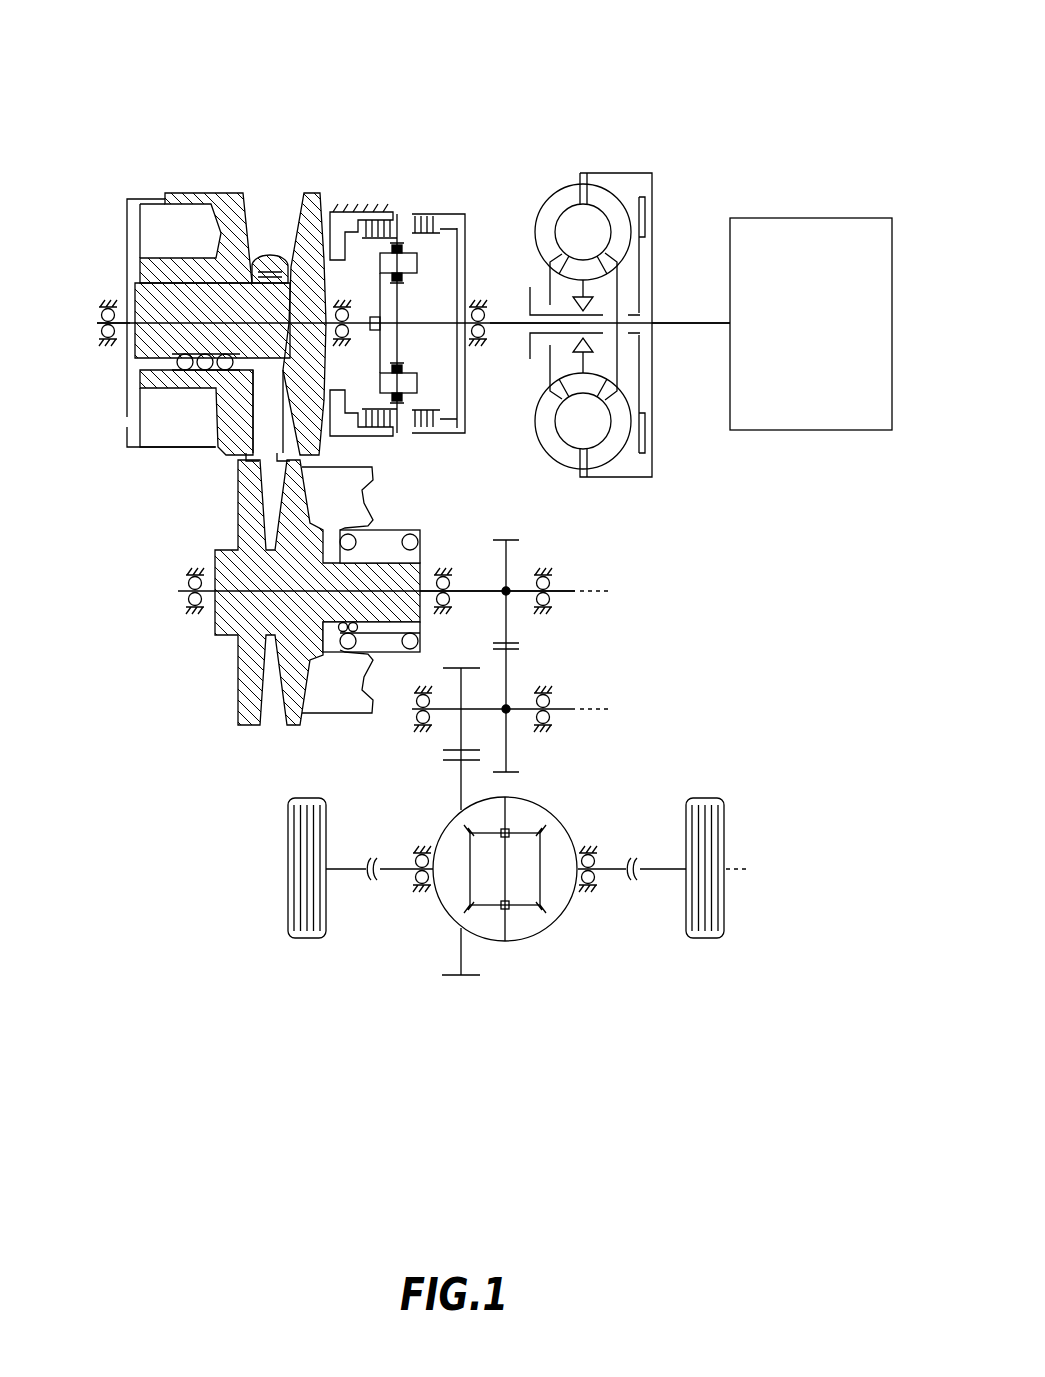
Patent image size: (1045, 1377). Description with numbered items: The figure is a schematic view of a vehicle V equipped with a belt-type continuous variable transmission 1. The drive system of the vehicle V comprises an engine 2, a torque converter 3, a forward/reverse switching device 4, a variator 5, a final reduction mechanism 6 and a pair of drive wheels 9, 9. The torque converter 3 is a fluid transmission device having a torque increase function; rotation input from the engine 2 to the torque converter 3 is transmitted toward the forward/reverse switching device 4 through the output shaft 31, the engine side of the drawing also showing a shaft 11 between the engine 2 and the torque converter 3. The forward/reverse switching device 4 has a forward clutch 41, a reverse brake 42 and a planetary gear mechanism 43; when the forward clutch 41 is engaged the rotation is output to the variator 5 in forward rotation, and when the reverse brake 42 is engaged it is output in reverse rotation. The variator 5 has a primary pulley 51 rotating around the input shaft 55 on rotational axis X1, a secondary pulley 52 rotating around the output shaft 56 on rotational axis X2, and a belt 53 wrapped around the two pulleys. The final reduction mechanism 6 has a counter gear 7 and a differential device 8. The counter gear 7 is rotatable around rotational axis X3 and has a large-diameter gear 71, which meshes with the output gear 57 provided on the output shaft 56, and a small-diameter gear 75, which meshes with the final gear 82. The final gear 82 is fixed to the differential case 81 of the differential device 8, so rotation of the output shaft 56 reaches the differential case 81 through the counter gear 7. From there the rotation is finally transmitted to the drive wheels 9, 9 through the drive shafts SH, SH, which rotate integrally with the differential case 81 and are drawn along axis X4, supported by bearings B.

The belt-type continuous variable transmission 1 is at (433, 535).
The engine 2 is at (903, 214).
The torque converter 3 is at (588, 267).
The forward/reverse switching device 4 is at (392, 268).
The variator 5 is at (311, 459).
The final reduction mechanism 6 is at (604, 636).
The counter gear 7 is at (527, 697).
The differential device 8 is at (502, 922).
The drive wheel 9 is at (303, 938).
The engine output shaft 11 is at (688, 326).
The output shaft 31 is at (522, 338).
The forward clutch 41 is at (426, 211).
The reverse brake 42 is at (388, 208).
The planetary gear mechanism 43 is at (397, 425).
The primary pulley 51 is at (160, 477).
The secondary pulley 52 is at (92, 463).
The belt 53 is at (245, 514).
The input shaft 55 is at (108, 306).
The output shaft 56 is at (478, 588).
The output gear 57 is at (508, 562).
The large-diameter gear 71 is at (508, 676).
The small-diameter gear 75 is at (456, 744).
The differential case 81 is at (553, 812).
The final gear 82 is at (460, 786).
The bearing B is at (422, 888).
The drive shaft SH is at (350, 870).
The vehicle V is at (488, 608).
The rotational axis X1 is at (80, 325).
The rotational axis X2 is at (613, 592).
The rotational axis X3 is at (613, 712).
The fourth axis X4 is at (777, 869).